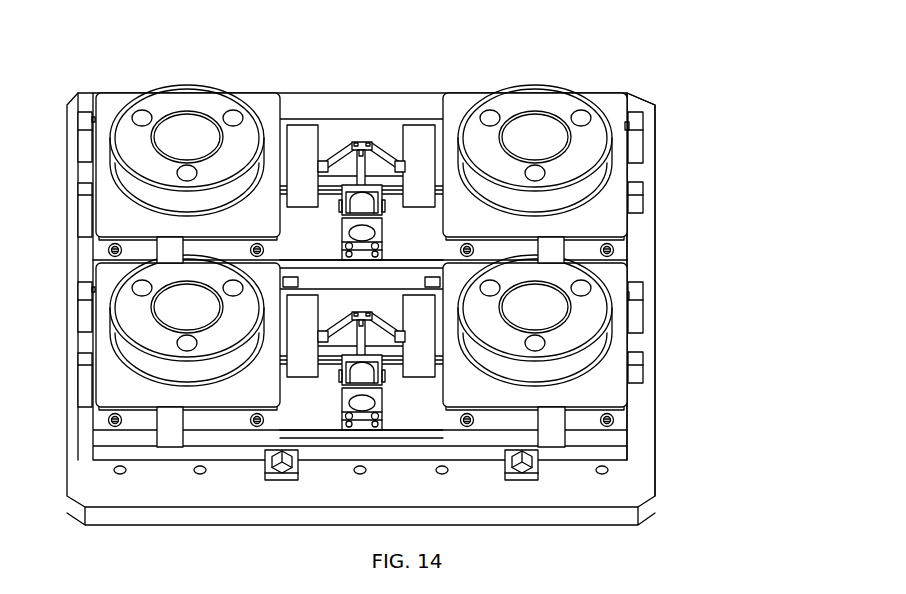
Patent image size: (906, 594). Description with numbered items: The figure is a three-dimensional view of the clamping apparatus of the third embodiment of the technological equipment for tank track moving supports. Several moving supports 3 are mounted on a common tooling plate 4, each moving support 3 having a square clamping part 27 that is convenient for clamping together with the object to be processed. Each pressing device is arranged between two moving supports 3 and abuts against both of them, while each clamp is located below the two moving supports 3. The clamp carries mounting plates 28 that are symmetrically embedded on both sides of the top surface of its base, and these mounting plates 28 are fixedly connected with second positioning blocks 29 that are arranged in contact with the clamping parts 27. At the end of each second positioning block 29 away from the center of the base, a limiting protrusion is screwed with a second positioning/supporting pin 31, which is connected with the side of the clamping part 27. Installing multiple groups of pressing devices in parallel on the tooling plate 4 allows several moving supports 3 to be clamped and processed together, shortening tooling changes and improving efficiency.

The moving support 3 is at (552, 103).
The square clamping part 27 is at (610, 103).
The second positioning/supporting pin 31 is at (630, 124).
The second positioning block 29 is at (637, 153).
The mounting plate 28 is at (622, 245).
The tooling plate 4 is at (647, 340).